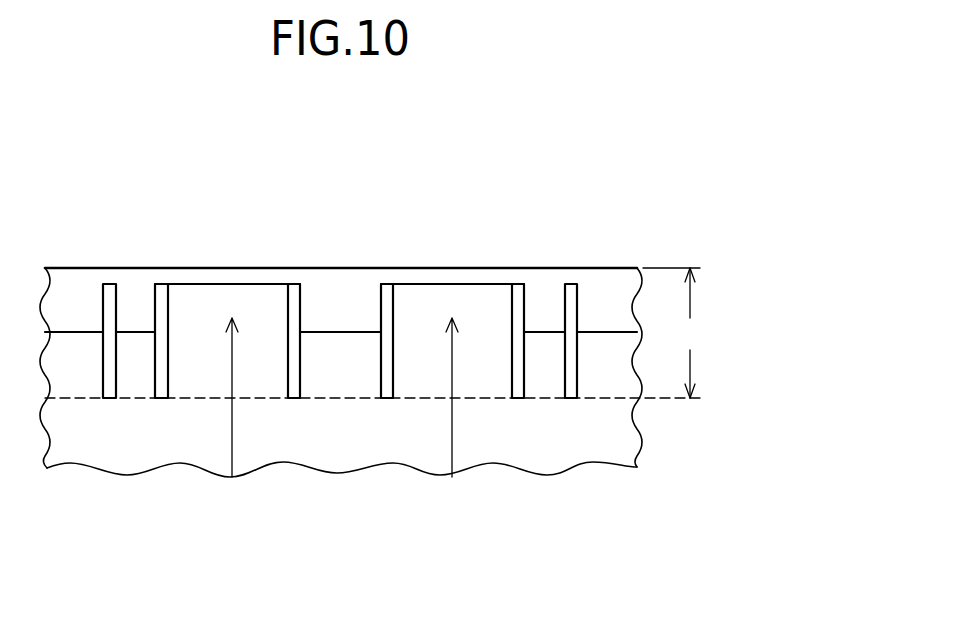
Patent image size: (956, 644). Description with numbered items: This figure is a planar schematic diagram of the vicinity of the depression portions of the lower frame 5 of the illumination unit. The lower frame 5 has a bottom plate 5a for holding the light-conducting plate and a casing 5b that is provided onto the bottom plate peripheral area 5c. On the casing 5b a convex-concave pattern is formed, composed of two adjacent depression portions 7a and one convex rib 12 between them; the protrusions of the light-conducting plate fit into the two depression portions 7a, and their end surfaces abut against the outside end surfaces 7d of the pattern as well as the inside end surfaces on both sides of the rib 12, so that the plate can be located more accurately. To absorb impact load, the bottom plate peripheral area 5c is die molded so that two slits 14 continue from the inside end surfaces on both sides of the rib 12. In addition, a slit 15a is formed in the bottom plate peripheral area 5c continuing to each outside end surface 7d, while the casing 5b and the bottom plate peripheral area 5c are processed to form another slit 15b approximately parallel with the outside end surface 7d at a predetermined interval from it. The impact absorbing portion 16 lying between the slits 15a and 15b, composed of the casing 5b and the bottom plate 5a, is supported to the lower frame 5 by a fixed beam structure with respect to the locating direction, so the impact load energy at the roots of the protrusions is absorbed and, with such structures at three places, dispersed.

The lower frame 5 is at (205, 150).
The bottom plate 5a is at (623, 430).
The casing 5b is at (608, 283).
The bottom plate peripheral area 5c is at (674, 333).
The convex rib 12 is at (338, 310).
The slits 14 is at (388, 367).
The slit 15a is at (167, 367).
The slit 15b is at (113, 367).
The impact absorbing portion 16 is at (138, 308).
The depression portions 7a is at (232, 477).
The outside end surfaces 7d is at (158, 307).